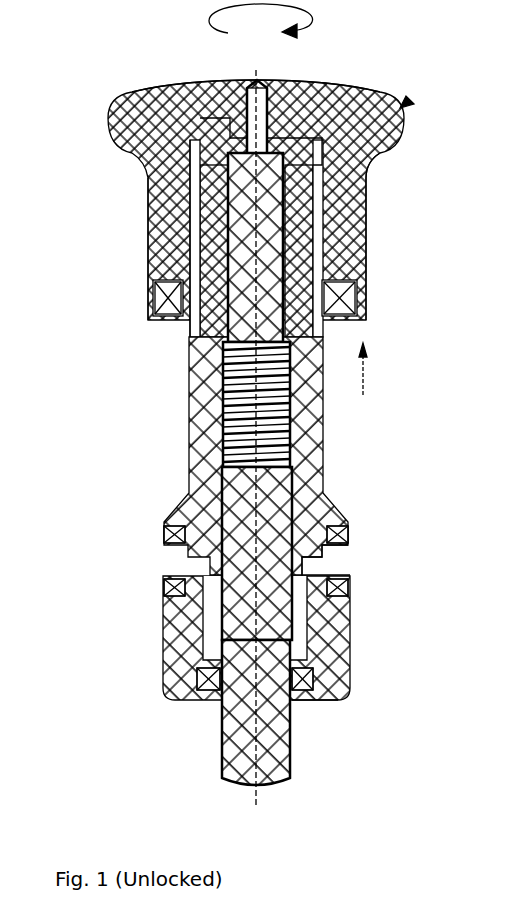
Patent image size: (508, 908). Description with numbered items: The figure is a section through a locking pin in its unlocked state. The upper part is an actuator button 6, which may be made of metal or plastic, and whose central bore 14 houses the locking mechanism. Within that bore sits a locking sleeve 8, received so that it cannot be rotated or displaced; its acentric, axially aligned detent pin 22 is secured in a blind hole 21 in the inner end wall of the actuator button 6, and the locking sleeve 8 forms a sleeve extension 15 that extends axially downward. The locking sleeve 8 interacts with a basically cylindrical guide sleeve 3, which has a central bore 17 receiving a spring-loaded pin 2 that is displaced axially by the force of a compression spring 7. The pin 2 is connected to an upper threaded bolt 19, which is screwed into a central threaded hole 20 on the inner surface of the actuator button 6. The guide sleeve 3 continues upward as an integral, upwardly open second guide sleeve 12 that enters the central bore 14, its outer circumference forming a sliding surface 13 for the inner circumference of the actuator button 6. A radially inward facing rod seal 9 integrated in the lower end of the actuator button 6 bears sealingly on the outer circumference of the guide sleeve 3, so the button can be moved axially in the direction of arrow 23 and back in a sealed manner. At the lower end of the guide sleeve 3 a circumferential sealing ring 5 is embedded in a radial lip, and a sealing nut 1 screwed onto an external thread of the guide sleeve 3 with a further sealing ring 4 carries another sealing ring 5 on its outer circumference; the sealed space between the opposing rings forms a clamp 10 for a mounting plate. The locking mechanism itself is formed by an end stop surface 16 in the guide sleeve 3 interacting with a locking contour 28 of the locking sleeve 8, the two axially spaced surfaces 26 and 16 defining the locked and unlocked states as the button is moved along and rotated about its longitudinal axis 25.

The sealing nut 1 is at (330, 678).
The spring-loaded pin 2 is at (290, 776).
The guide sleeve 3 is at (330, 458).
The further sealing ring 4 is at (212, 700).
The sealing ring 5 is at (177, 536).
The actuator button 6 is at (408, 102).
The compression spring 7 is at (198, 388).
The locking sleeve 8 is at (143, 150).
The rod seal 9 is at (366, 303).
The clamp 10 is at (330, 568).
The second guide sleeve 12 is at (366, 242).
The sliding surface 13 is at (362, 192).
The central bore 14 is at (370, 145).
The sleeve extension 15 is at (205, 253).
The end stop surface 16 is at (190, 345).
The central bore 17 is at (197, 215).
The threaded bolt 19 is at (300, 95).
The central threaded hole 20 is at (258, 82).
The blind hole 21 is at (173, 90).
The detent pin 22 is at (175, 108).
The arrow 23 is at (363, 380).
The longitudinal axis 25 is at (256, 795).
The guide contour surface 26 is at (507, 848).
The locking contour 28 is at (256, 238).